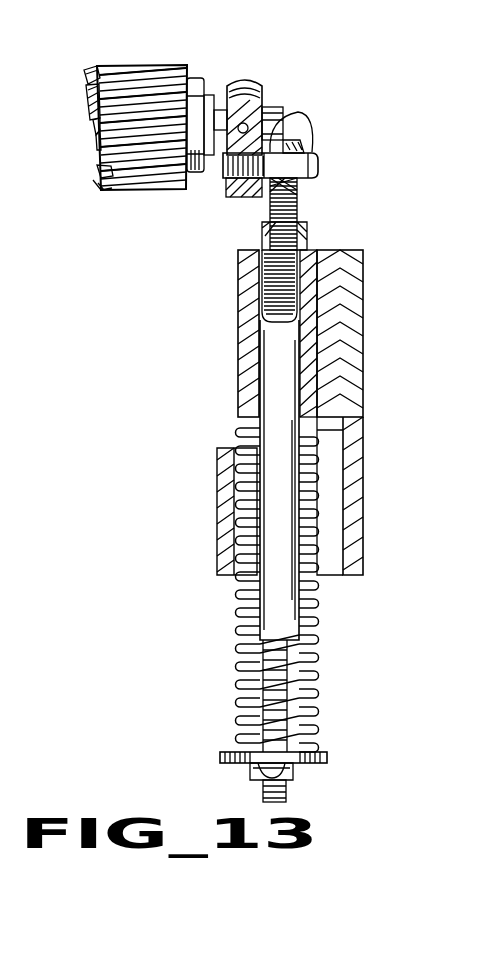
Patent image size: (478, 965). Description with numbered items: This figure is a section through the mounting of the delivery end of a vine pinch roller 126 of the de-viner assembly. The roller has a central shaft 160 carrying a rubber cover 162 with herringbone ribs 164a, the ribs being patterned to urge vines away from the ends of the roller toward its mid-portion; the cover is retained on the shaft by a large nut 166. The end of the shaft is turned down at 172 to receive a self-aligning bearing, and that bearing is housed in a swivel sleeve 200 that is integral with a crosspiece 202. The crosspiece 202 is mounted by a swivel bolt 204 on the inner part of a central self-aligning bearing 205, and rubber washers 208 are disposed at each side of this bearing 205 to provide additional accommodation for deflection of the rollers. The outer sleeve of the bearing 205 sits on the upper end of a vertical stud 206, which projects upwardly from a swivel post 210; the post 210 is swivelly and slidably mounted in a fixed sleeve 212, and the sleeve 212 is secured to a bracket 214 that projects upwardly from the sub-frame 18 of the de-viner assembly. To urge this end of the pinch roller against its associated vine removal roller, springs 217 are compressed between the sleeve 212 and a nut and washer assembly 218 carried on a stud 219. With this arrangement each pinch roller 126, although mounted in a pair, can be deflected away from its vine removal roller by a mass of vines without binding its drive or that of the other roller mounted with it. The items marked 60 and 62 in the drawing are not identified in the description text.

The vine pinch roller 126 is at (160, 66).
The rubber cover 162 is at (95, 70).
The central shaft 160 is at (92, 96).
The housing 60 is at (50, 140).
The shaft 62 is at (50, 160).
The herringbone rib 164a is at (108, 182).
The large nut 166 is at (198, 82).
The swivel sleeve 200 is at (246, 84).
The turned down end 172 is at (256, 108).
The rubber washer 208 is at (286, 118).
The swivel bolt 204 is at (226, 172).
The crosspiece 202 is at (252, 196).
The central self-aligning bearing 205 is at (298, 183).
The bracket 214 is at (345, 250).
The vertical stud 206 is at (277, 255).
The fixed sleeve 212 is at (242, 290).
The swivel post 210 is at (278, 338).
The spring 217 is at (240, 598).
The sub-frame 18 is at (336, 582).
The stud 219 is at (265, 678).
The nut and washer assembly 218 is at (258, 770).